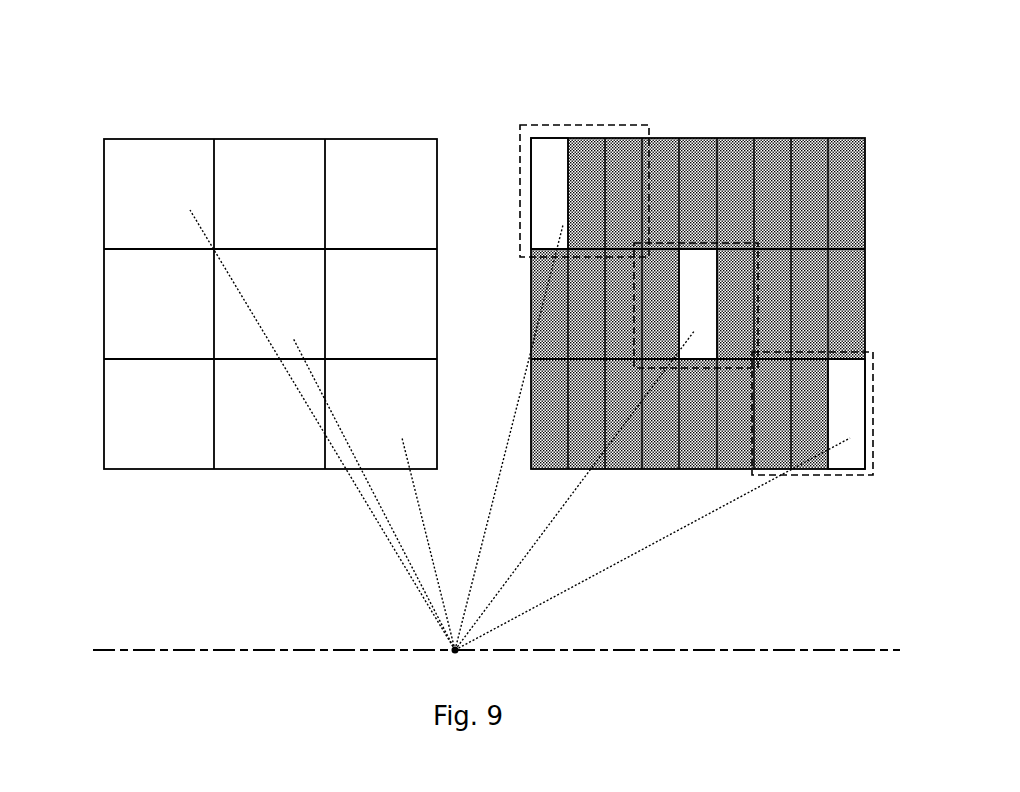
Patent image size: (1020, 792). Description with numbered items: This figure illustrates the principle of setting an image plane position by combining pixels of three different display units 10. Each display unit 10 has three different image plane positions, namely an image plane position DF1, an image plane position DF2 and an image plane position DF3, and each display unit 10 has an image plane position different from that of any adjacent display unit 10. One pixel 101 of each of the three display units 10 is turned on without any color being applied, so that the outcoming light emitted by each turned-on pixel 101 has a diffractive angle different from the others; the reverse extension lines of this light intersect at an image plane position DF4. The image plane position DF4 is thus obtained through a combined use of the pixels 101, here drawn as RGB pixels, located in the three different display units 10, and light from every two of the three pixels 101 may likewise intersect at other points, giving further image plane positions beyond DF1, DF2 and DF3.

The display unit 10 is at (488, 300).
The pixel 101 is at (698, 273).
The image plane position DF1 is at (270, 305).
The image plane position DF2 is at (270, 305).
The image plane position DF3 is at (270, 305).
The image plane position DF4 is at (479, 651).
The RGB pixel RGB is at (698, 304).